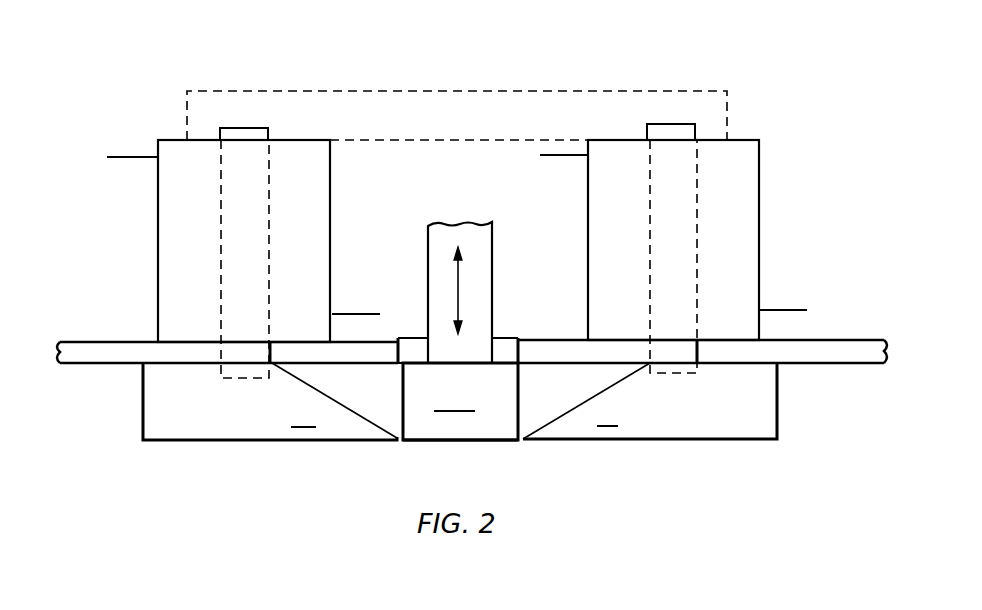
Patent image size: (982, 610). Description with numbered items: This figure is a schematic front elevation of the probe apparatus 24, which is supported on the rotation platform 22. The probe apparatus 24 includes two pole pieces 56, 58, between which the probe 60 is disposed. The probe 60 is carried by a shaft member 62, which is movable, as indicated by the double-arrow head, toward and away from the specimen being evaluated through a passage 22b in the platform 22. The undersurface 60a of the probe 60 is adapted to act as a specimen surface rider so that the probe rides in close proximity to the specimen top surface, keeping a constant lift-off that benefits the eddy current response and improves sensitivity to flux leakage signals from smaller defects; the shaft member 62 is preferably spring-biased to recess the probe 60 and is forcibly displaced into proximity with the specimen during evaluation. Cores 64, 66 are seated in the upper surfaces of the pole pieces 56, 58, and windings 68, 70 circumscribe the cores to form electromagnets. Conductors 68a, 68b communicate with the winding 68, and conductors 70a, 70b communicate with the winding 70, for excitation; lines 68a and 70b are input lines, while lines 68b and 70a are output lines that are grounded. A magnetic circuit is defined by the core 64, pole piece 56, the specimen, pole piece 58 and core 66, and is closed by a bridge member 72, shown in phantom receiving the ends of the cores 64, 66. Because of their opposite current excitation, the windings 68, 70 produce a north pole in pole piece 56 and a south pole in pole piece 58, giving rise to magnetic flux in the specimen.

The platform 22 is at (827, 350).
The passage 22b is at (502, 348).
The probe apparatus 24 is at (778, 67).
The pole piece 56 is at (238, 420).
The pole piece 58 is at (707, 410).
The probe 60 is at (460, 401).
The undersurface 60a is at (477, 440).
The shaft member 62 is at (480, 270).
The core 64 is at (237, 353).
The core 66 is at (680, 348).
The winding 68 is at (330, 193).
The conductor 68a is at (123, 157).
The conductor 68b is at (355, 313).
The winding 70 is at (748, 170).
The conductor 70a is at (567, 155).
The conductor 70b is at (790, 308).
The bridge member 72 is at (527, 108).